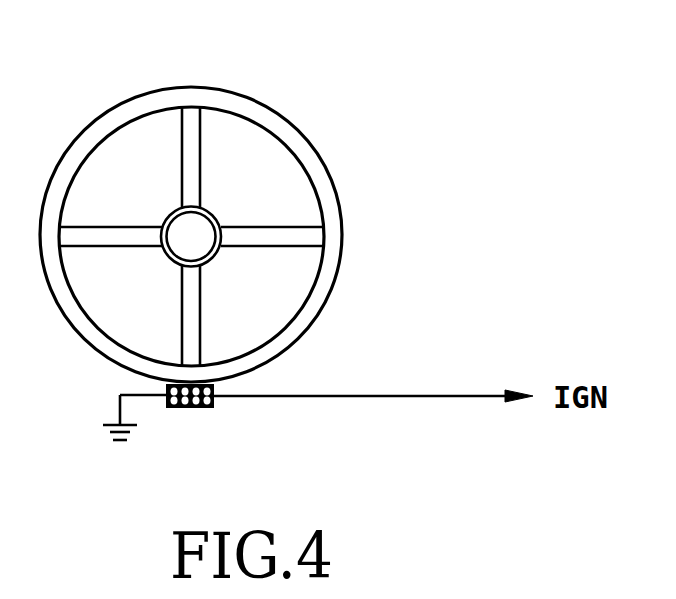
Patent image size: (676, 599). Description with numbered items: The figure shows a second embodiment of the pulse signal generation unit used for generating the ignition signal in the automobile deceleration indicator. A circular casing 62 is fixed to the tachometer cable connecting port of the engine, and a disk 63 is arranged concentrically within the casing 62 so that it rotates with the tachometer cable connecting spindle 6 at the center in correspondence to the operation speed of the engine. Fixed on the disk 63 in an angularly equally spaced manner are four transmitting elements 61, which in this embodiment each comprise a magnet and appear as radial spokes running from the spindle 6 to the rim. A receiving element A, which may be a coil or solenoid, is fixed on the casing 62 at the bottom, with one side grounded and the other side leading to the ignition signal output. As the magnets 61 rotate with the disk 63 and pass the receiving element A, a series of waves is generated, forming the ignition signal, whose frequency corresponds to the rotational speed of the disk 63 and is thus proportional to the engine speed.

The tachometer cable connecting spindle 6 is at (218, 217).
The transmitting elements 61 is at (318, 242).
The circular casing 62 is at (267, 108).
The disk 63 is at (105, 125).
The receiving element A is at (210, 407).